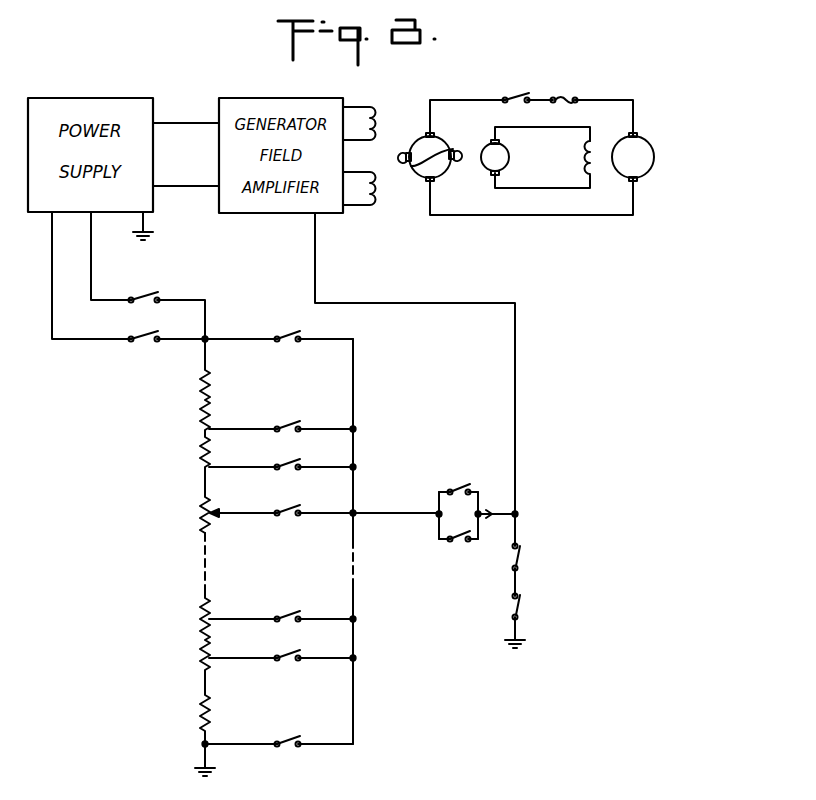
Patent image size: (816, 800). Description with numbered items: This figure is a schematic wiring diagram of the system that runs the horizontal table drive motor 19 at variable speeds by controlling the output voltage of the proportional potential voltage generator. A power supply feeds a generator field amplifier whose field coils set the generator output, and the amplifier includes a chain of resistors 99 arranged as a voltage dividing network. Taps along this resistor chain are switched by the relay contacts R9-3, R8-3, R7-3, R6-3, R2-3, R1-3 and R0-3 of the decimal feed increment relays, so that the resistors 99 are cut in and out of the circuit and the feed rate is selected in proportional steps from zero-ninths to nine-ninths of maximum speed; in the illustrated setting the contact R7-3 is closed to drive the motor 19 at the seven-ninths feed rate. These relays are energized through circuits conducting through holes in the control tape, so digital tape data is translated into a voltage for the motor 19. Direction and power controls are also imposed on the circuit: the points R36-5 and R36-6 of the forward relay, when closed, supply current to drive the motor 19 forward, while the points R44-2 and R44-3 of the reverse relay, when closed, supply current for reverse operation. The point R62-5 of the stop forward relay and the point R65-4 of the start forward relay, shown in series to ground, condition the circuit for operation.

The motor 19 is at (646, 160).
The resistors 99 is at (210, 382).
The reverse relay point R44-2 is at (146, 293).
The forward relay point R36-6 is at (147, 333).
The decimal feed increment relay contact R9-3 is at (292, 340).
The decimal feed increment relay contact R8-3 is at (287, 420).
The 7/9 feed rate contact R7-3 is at (290, 470).
The decimal feed increment relay contact R6-3 is at (291, 508).
The decimal feed increment relay contact R2-3 is at (284, 616).
The decimal feed increment relay contact R1-3 is at (281, 655).
The decimal feed increment relay contact R0-3 is at (284, 737).
The forward relay point R36-5 is at (462, 488).
The reverse relay point R44-3 is at (458, 542).
The stop forward relay point R62-5 is at (521, 557).
The start forward relay point R65-4 is at (521, 606).